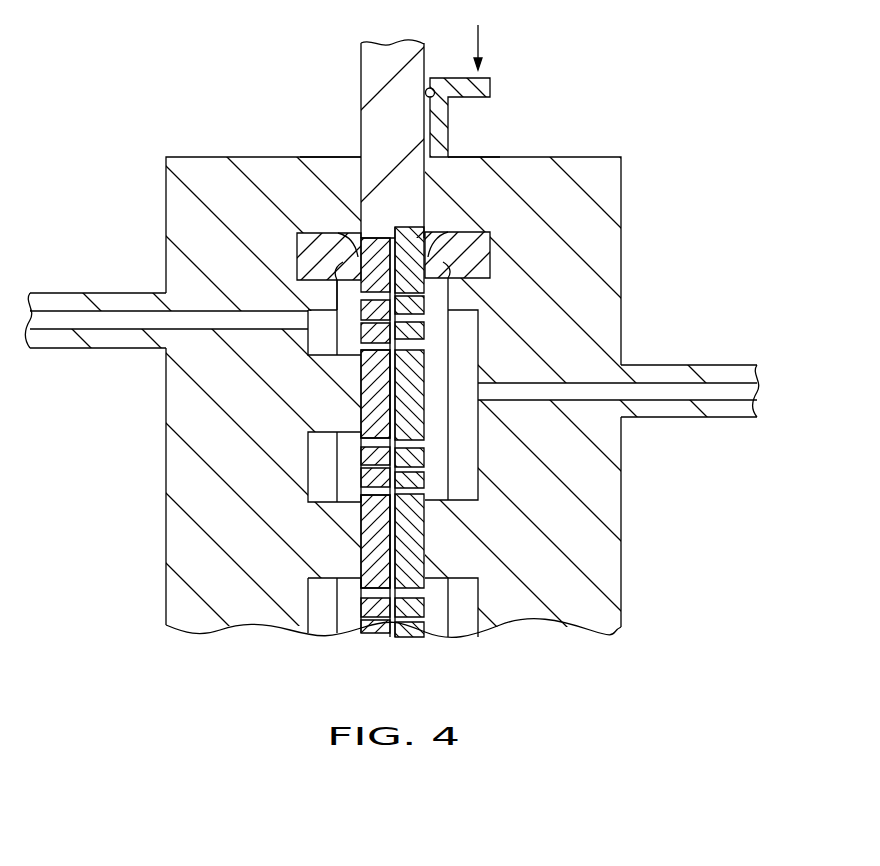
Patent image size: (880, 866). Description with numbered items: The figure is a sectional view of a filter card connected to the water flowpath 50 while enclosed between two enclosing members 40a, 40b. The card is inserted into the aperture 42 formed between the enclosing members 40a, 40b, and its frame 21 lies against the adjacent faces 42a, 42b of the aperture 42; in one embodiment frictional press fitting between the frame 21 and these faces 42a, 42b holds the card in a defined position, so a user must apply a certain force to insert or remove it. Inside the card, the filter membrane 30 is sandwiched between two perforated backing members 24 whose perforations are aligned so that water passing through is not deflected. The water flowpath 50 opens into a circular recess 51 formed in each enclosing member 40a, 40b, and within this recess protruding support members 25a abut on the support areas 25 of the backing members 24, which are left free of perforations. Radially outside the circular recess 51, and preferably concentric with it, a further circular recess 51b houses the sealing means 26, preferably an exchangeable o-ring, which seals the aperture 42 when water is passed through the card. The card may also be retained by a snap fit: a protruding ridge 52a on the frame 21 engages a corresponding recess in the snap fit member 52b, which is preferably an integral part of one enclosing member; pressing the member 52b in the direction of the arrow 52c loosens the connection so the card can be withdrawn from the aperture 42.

The frame 21 is at (361, 72).
The protruding ridge 52a is at (433, 86).
The snap fit member 52b is at (491, 88).
The pressing direction 52c is at (483, 38).
The aperture 42 is at (361, 150).
The adjacent face 42a is at (360, 188).
The adjacent face 42b is at (427, 185).
The filter membrane 30 is at (427, 235).
The sealing means 26 is at (306, 260).
The perforated backing member 24 is at (385, 321).
The support area 25 is at (388, 372).
The protruding support member 25a is at (320, 537).
The circular recess 51 is at (482, 470).
The circular recess for housing sealing means 51b is at (297, 243).
The water flowpath 50 is at (52, 306).
The enclosing member 40a is at (176, 548).
The enclosing member 40b is at (613, 548).